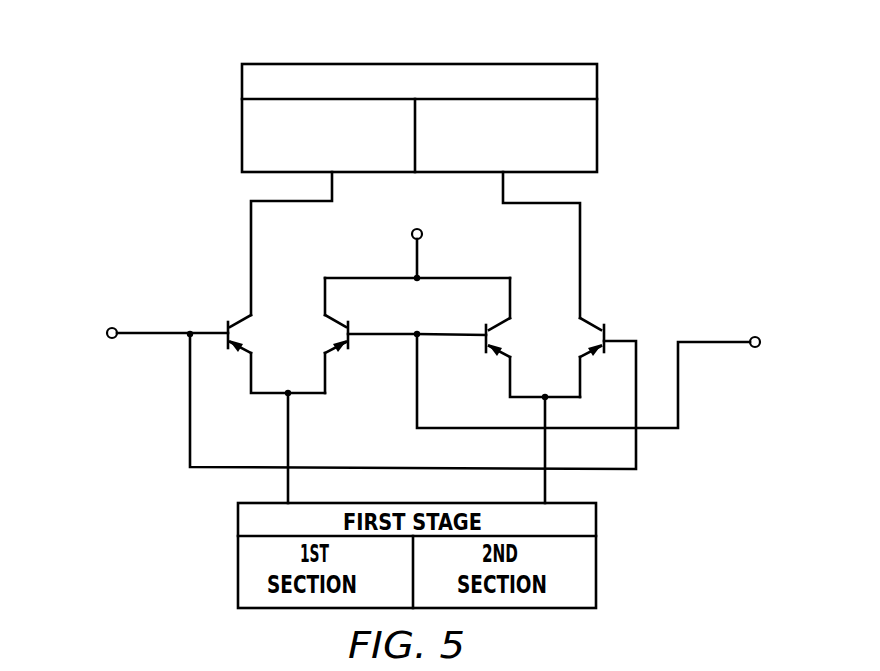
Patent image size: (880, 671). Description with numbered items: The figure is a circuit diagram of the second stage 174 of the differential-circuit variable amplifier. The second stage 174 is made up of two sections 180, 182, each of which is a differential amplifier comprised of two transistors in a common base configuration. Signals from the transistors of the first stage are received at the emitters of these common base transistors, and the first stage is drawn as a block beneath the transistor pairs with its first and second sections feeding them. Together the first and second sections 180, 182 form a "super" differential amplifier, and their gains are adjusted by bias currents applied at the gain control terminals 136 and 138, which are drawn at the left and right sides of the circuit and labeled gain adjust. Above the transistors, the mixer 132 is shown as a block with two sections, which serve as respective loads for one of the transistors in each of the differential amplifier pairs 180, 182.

The mixer 132 is at (424, 92).
The second stage 174 is at (470, 317).
The first section 180 is at (284, 319).
The second section 182 is at (554, 326).
The gain control terminal 136 is at (125, 319).
The gain control terminal 138 is at (789, 325).